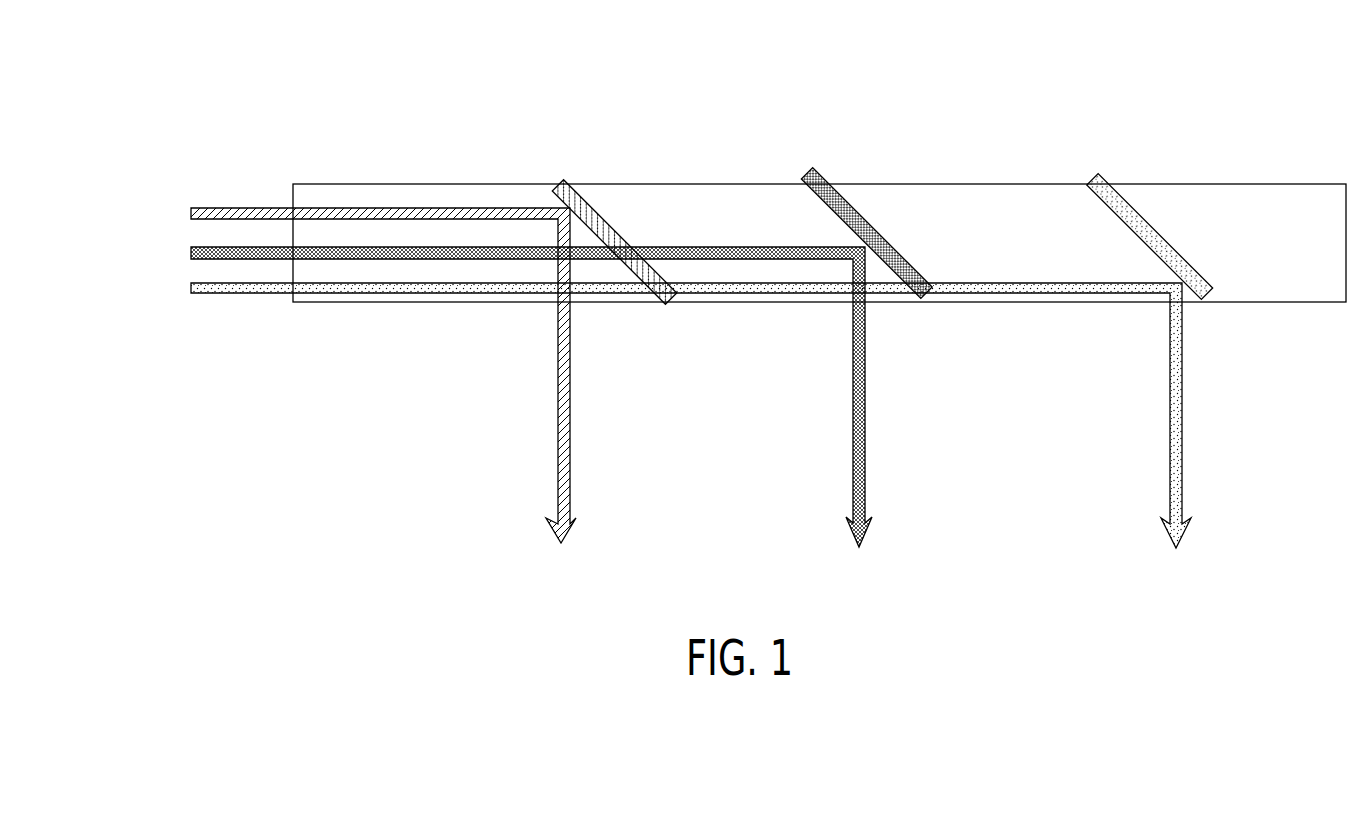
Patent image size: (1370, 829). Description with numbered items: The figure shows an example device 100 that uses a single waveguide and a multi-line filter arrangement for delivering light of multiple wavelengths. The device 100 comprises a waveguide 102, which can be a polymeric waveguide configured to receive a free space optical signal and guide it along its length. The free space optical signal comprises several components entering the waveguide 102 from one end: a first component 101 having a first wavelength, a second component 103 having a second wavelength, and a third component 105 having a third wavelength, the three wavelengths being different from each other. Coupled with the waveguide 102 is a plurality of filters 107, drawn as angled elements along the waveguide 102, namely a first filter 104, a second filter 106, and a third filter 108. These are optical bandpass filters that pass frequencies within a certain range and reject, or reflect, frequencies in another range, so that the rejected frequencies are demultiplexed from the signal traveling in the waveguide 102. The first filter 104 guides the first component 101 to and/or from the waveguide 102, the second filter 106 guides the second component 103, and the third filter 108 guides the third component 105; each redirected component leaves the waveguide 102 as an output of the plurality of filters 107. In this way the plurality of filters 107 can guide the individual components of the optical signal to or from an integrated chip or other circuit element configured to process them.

The device 100 is at (890, 118).
The first component 101 is at (161, 210).
The waveguide 102 is at (1174, 168).
The second component 103 is at (161, 250).
The first filter 104 is at (565, 182).
The third component 105 is at (161, 286).
The second filter 106 is at (812, 172).
The plurality of filters 107 is at (660, 328).
The third filter 108 is at (1099, 174).